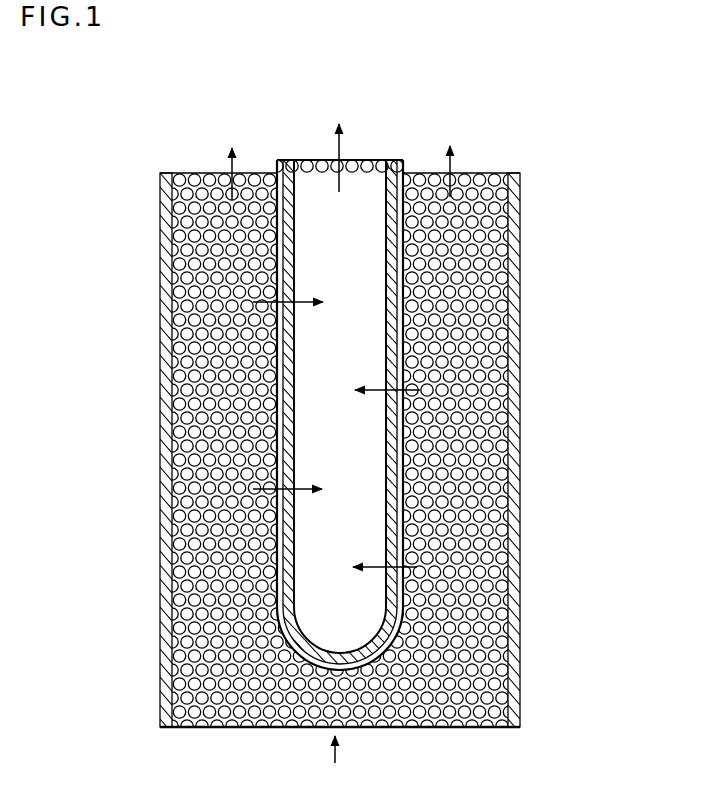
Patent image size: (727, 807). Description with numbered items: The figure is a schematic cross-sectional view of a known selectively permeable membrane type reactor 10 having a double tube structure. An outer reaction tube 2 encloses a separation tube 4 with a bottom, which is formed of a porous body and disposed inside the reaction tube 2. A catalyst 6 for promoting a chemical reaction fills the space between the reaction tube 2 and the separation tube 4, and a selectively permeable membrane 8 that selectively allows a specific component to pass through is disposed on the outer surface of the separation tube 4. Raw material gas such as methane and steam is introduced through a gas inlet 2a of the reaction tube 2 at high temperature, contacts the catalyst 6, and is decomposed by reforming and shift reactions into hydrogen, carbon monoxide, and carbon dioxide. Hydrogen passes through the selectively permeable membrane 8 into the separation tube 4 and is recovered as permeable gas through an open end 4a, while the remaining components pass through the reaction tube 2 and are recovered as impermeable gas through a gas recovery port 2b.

The reaction tube 2 is at (161, 277).
The gas inlet 2a is at (232, 733).
The gas recovery port 2b is at (203, 172).
The separation tube 4 is at (287, 160).
The open end 4a is at (366, 158).
The catalyst 6 is at (490, 177).
The selectively permeable membrane 8 is at (403, 158).
The selectively permeable membrane type reactor 10 is at (566, 205).